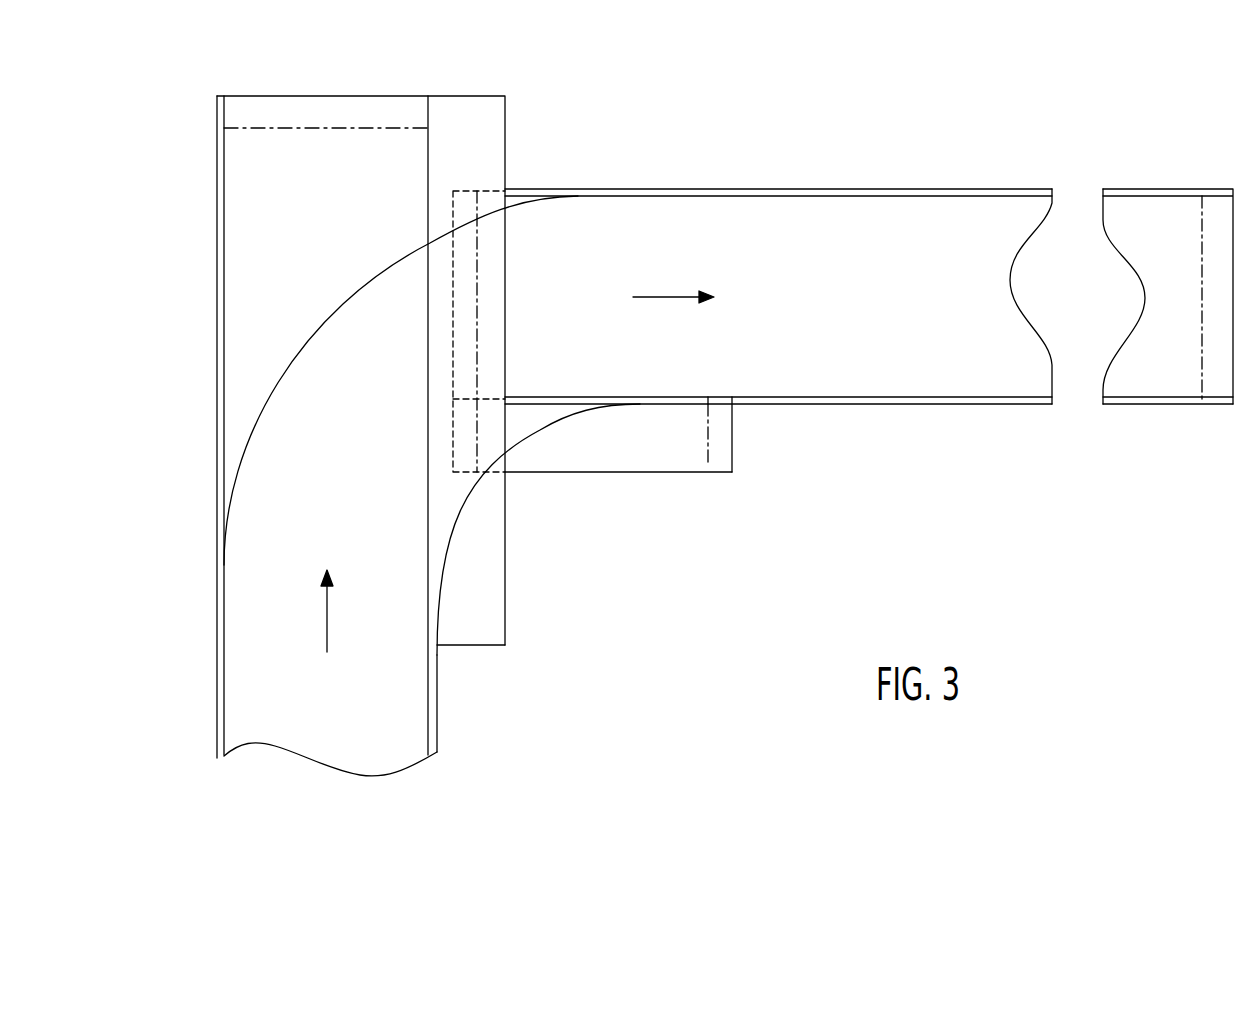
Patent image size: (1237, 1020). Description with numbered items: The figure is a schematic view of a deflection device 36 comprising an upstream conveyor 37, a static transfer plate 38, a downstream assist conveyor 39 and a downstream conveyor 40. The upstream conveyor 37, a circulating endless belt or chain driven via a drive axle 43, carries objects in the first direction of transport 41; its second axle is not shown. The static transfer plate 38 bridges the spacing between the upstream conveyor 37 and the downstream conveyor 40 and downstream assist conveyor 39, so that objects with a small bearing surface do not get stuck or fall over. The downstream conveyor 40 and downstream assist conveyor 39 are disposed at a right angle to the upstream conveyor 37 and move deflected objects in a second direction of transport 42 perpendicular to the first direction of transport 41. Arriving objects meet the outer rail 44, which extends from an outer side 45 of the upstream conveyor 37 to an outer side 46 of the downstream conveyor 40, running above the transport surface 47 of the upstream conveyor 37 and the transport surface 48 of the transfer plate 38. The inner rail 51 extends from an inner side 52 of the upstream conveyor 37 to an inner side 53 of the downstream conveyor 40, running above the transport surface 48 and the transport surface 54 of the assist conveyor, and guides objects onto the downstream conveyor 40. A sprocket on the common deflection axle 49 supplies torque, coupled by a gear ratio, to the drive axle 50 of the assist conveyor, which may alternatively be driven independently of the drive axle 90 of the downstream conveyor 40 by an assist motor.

The deflection device 36 is at (927, 107).
The upstream conveyor 37 is at (294, 755).
The static transfer plate 38 is at (472, 647).
The downstream assist conveyor 39 is at (733, 452).
The downstream conveyor 40 is at (1035, 323).
The first direction of transport 41 is at (340, 611).
The second direction of transport 42 is at (673, 313).
The drive axle 43 is at (367, 128).
The outer rail 44 is at (280, 388).
The outer side 45 is at (217, 645).
The outer side 46 is at (722, 188).
The transport surface 47 is at (245, 555).
The transport surface 48 is at (490, 592).
The common deflection axle 49 is at (480, 233).
The drive axle 50 is at (707, 462).
The inner rail 51 is at (462, 512).
The inner side 52 is at (437, 727).
The inner side 53 is at (935, 406).
The transport surface 54 is at (623, 474).
The drive axle 90 is at (1203, 218).